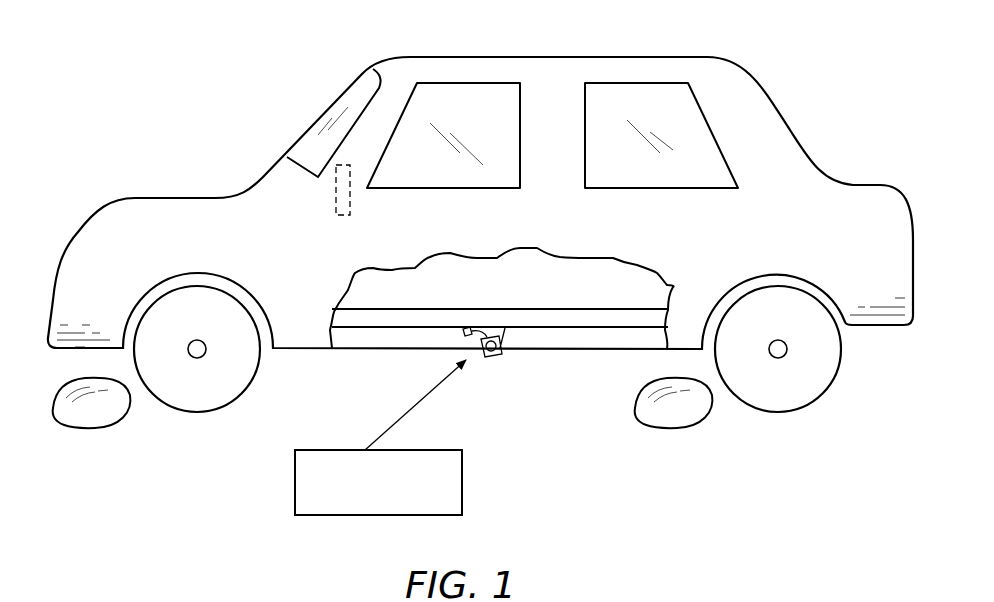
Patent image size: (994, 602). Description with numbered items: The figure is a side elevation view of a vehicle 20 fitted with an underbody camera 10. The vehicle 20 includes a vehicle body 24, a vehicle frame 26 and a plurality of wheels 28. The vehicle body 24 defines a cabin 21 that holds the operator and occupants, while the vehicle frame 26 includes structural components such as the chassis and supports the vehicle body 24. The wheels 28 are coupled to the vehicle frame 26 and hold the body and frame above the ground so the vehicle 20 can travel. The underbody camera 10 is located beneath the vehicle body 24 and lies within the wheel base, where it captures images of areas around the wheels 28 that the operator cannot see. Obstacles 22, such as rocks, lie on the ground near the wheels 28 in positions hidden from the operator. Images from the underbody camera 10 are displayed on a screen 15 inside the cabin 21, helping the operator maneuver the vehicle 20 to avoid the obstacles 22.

The underbody camera 10 is at (462, 482).
The screen 15 is at (336, 195).
The vehicle 20 is at (249, 93).
The cabin 21 is at (457, 104).
The obstacles 22 is at (69, 432).
The vehicle body 24 is at (553, 80).
The vehicle frame 26 is at (558, 331).
The wheels 28 is at (208, 418).